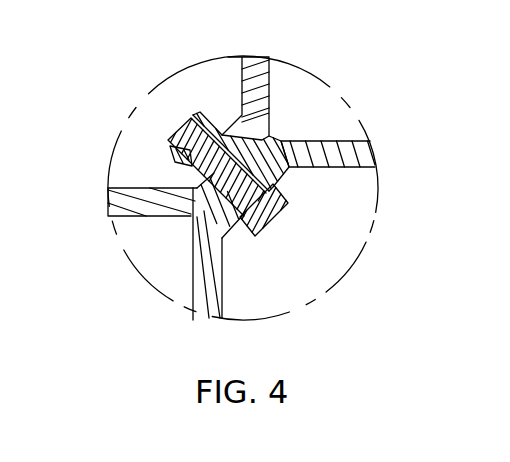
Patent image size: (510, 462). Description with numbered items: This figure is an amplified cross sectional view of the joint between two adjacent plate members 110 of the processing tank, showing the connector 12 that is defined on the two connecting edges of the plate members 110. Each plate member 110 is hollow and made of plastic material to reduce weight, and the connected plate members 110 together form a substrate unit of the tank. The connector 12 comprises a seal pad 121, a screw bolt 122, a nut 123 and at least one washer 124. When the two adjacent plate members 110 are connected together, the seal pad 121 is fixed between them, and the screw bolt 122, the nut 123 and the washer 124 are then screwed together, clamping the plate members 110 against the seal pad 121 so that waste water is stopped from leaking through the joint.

The connector 12 is at (291, 211).
The plate member 110 is at (148, 216).
The seal pad 121 is at (283, 139).
The screw bolt 122 is at (265, 226).
The nut 123 is at (170, 150).
The washer 124 is at (233, 122).